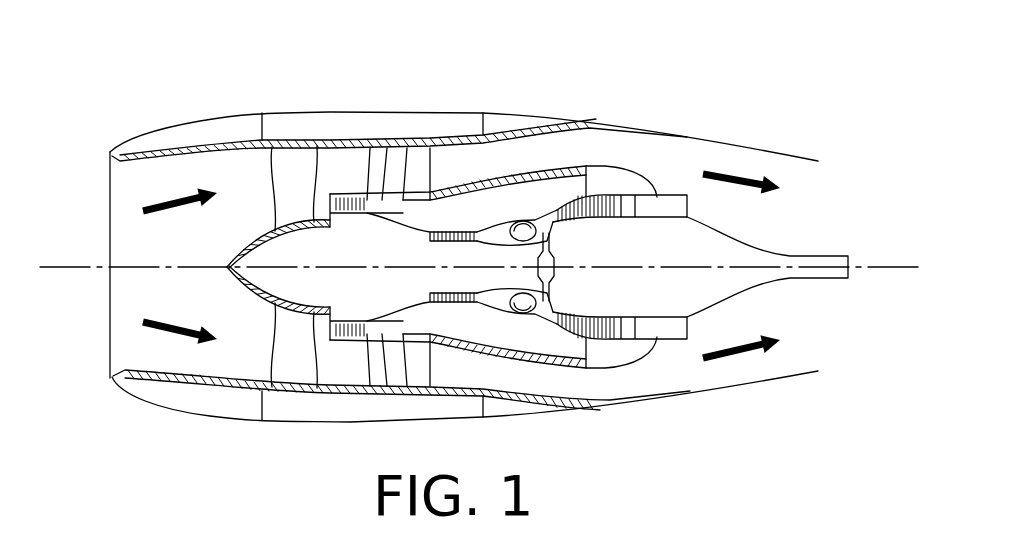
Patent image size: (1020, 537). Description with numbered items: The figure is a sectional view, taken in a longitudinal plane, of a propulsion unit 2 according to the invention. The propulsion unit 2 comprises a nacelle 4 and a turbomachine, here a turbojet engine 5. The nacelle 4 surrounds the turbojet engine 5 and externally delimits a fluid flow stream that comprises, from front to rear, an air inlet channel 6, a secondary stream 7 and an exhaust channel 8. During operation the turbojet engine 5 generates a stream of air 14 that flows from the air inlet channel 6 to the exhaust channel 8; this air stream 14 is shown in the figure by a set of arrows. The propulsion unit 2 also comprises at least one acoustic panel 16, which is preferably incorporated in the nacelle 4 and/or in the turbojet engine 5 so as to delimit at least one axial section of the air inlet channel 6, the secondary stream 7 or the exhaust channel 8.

The propulsion unit 2 is at (480, 232).
The nacelle 4 is at (680, 128).
The turbojet engine 5 is at (527, 168).
The air inlet channel 6 is at (72, 193).
The secondary stream 7 is at (600, 375).
The exhaust channel 8 is at (829, 224).
The stream of air 14 is at (168, 328).
The acoustic panel 16 is at (333, 136).